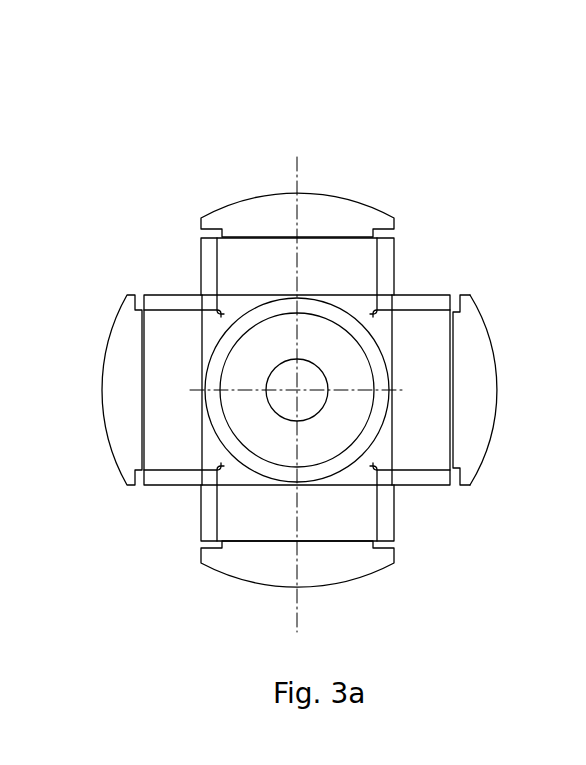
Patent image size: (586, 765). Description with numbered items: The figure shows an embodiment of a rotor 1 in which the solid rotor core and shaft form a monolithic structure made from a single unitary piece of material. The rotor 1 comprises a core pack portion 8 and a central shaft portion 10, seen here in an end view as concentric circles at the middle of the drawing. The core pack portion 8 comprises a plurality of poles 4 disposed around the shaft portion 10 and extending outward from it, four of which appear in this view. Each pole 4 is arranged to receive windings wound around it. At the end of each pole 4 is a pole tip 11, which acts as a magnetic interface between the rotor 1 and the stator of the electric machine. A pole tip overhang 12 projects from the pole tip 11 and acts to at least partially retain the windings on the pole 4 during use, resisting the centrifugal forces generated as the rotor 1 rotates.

The rotor 1 is at (580, 118).
The pole 4 is at (130, 333).
The core pack portion 8 is at (332, 220).
The shaft portion 10 is at (333, 470).
The pole tip 11 is at (495, 363).
The pole tip overhang 12 is at (470, 295).